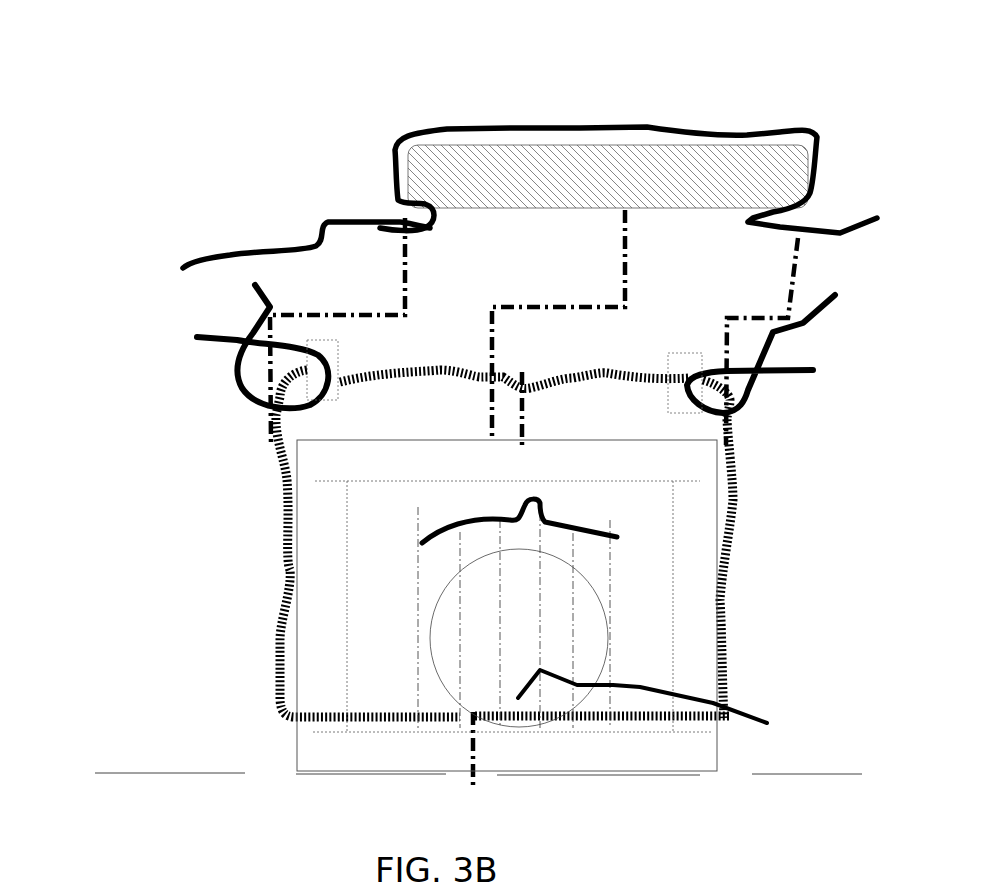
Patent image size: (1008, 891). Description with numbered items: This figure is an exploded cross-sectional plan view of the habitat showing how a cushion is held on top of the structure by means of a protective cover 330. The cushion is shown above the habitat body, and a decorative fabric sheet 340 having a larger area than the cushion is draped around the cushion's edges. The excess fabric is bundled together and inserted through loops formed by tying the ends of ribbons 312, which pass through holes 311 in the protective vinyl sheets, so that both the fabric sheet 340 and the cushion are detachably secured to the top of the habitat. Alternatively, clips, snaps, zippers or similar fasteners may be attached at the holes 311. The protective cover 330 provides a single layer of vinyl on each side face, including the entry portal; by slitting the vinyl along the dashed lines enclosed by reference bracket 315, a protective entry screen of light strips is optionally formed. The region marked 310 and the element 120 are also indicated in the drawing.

The decorative fabric sheet 340 is at (532, 111).
The support member 120 is at (607, 224).
The holes 311 is at (340, 367).
The ribbons 312 is at (181, 343).
The reference bracket 315 is at (563, 510).
The frame 310 is at (558, 617).
The protective cover 330 is at (260, 546).